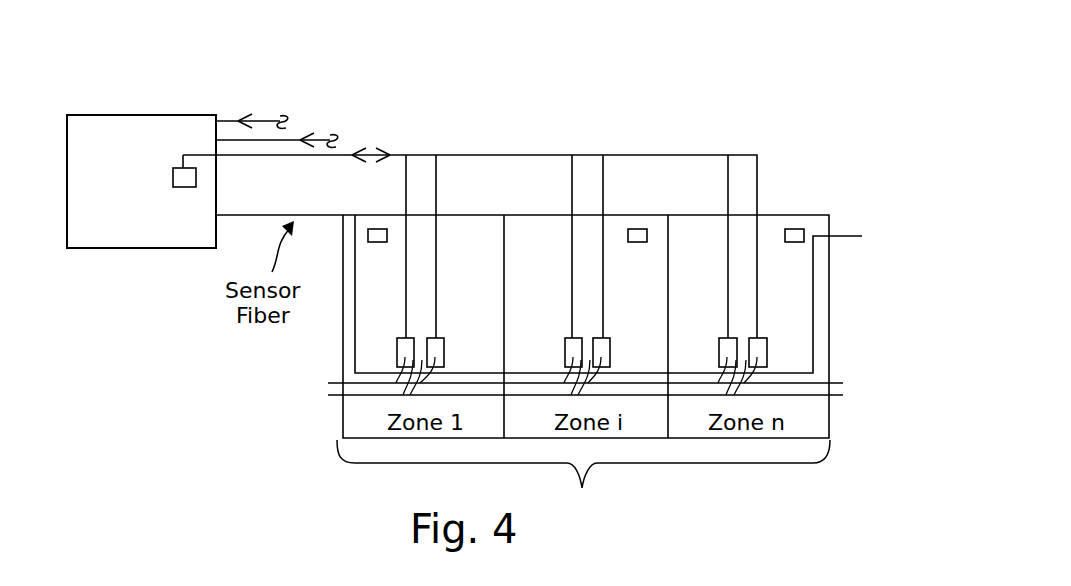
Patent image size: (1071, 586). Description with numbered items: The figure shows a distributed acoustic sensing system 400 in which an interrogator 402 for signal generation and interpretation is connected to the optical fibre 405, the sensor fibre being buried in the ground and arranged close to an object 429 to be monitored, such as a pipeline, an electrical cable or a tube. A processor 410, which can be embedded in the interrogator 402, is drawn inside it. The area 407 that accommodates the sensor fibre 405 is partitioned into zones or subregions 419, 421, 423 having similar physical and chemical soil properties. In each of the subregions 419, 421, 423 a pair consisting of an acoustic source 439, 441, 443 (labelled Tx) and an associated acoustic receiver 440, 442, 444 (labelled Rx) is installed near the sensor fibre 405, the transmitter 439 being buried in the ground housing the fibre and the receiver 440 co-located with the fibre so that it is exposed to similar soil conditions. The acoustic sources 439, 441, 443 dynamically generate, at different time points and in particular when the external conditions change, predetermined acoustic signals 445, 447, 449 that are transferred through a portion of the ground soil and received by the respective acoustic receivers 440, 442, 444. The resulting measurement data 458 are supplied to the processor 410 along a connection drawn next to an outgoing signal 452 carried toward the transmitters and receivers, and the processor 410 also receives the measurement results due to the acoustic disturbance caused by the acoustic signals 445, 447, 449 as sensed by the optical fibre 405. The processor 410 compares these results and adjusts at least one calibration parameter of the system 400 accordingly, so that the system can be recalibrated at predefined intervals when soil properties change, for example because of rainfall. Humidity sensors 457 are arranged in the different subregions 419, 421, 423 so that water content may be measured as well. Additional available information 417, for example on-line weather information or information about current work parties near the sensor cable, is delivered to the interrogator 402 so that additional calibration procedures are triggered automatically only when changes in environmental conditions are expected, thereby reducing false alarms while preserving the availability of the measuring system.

The distributed acoustic sensing system 400 is at (650, 84).
The interrogator 402 is at (134, 114).
The optical fibre 405 is at (354, 347).
The area 407 is at (583, 479).
The processor 410 is at (197, 177).
The additional available information 417 is at (238, 120).
The first subregion 419 is at (486, 256).
The second subregion 421 is at (562, 256).
The third subregion 423 is at (724, 257).
The object to be monitored 429 is at (843, 397).
The acoustic source 439 is at (403, 336).
The acoustic receiver 440 is at (439, 336).
The acoustic source 441 is at (571, 336).
The acoustic receiver 442 is at (604, 336).
The acoustic source 443 is at (727, 336).
The acoustic receiver 444 is at (758, 336).
The acoustic signal 445 is at (428, 382).
The acoustic signal 447 is at (597, 382).
The acoustic signal 449 is at (727, 371).
The transmitted optical signal 452 is at (391, 153).
The humidity sensor 457 is at (377, 228).
The measurement data 458 is at (354, 153).